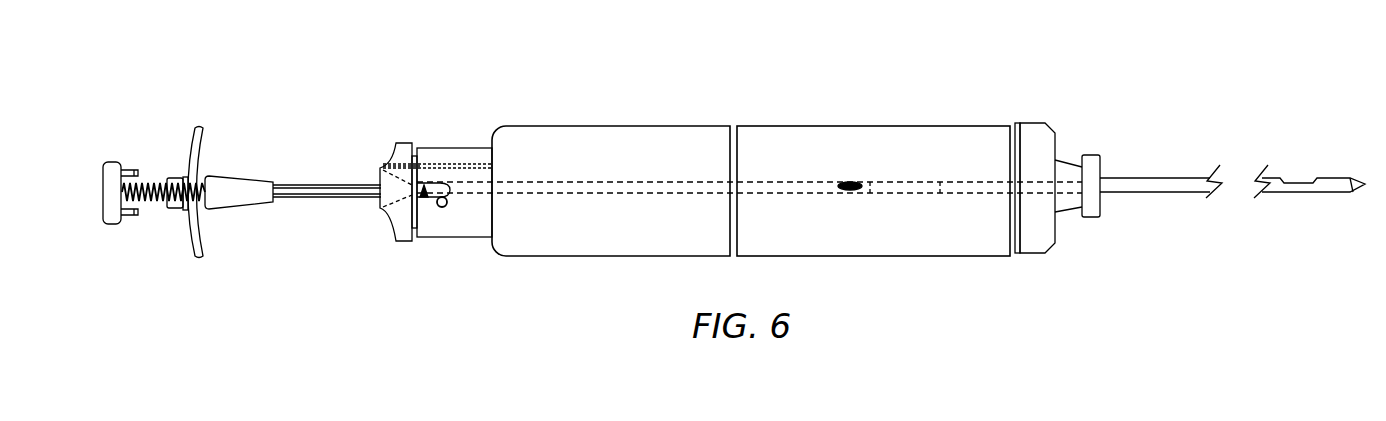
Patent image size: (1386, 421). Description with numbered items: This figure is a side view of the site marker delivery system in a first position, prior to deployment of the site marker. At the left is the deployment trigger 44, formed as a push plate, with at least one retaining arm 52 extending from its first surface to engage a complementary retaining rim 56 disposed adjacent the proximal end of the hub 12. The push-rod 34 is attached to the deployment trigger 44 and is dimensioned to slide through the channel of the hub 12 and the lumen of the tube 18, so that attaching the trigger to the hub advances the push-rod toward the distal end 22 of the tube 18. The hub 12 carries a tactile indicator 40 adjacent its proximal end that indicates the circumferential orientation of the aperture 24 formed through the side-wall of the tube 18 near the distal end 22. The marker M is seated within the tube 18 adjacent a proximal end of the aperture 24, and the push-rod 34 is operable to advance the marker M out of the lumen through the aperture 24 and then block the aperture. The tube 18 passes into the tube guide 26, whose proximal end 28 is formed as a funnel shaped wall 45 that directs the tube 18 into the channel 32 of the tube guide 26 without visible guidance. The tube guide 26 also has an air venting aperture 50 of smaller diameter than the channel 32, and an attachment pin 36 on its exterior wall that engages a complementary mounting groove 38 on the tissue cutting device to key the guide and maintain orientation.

The hub 12 is at (229, 187).
The tube 18 is at (297, 203).
The distal end of tube 22 is at (943, 182).
The aperture 24 is at (873, 182).
The tube guide 26 is at (352, 171).
The proximal end of tube guide 28 is at (351, 176).
The channel 32 is at (426, 199).
The push-rod 34 is at (153, 187).
The attachment pin 36 is at (443, 208).
The mounting groove 38 is at (429, 186).
The tactile indicator 40 is at (197, 130).
The deployment trigger 44 is at (110, 192).
The funnel shaped wall 45 is at (382, 207).
The air venting aperture 50 is at (382, 172).
The retaining arm 52 is at (132, 217).
The retaining rim 56 is at (183, 210).
The marker M is at (848, 182).